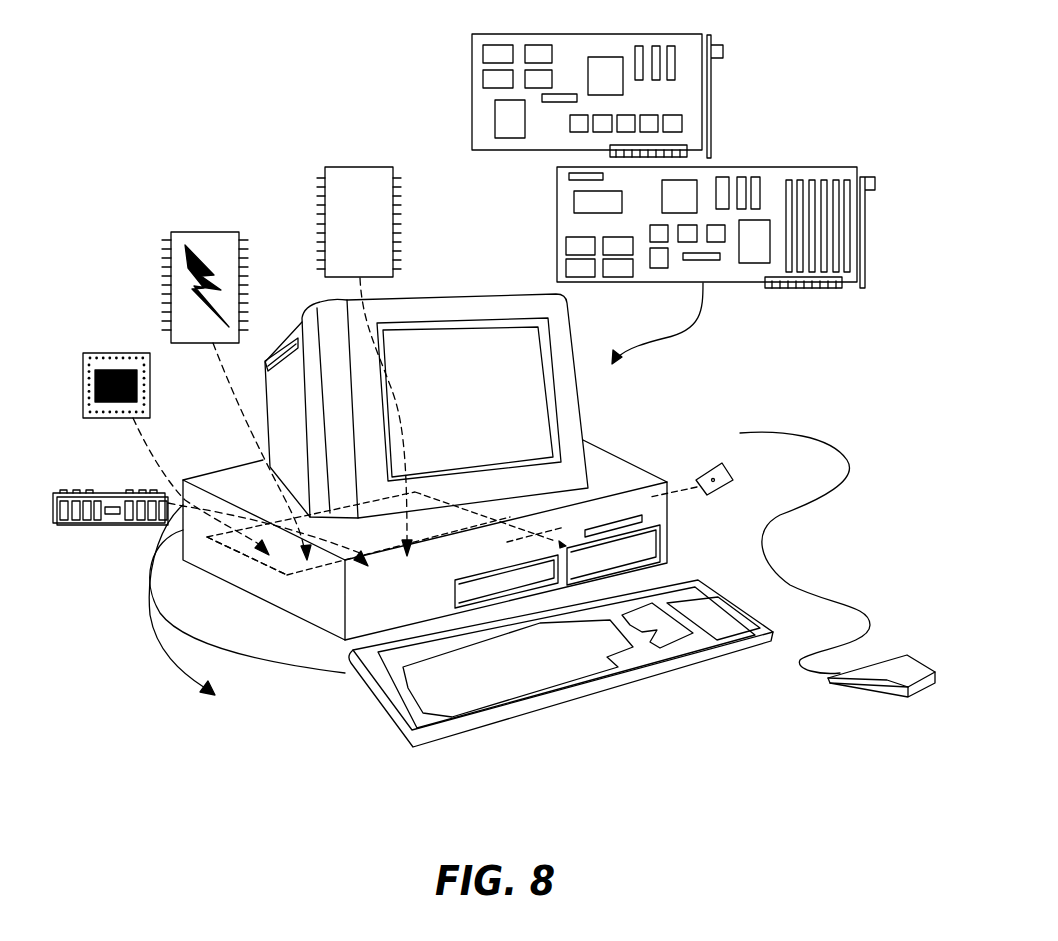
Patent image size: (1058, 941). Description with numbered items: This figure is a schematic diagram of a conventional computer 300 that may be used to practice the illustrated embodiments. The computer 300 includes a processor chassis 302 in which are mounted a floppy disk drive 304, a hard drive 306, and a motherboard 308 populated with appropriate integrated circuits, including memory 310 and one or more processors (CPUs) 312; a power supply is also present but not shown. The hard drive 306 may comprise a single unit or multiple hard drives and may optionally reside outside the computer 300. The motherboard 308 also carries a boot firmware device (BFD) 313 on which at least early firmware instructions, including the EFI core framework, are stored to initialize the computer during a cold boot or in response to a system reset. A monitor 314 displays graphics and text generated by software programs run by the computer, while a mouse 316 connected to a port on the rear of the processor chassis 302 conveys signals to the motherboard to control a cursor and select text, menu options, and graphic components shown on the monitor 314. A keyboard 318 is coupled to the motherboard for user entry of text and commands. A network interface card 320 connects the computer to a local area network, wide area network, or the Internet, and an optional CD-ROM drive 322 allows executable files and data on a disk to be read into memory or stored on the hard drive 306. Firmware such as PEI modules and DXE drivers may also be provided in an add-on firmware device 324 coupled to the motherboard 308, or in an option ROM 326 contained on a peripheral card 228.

The circuit card 228 is at (497, 132).
The computer 300 is at (570, 718).
The processor chassis 302 is at (650, 518).
The floppy disk drive 304 is at (627, 517).
The hard drive 306 is at (637, 550).
The motherboard 308 is at (287, 575).
The memory 310 is at (90, 492).
The processor (CPU) 312 is at (148, 403).
The boot firmware device (BFD) 313 is at (245, 263).
The monitor 314 is at (573, 358).
The mouse 316 is at (878, 687).
The keyboard 318 is at (657, 678).
The network interface card 320 is at (857, 222).
The CD-ROM drive 322 is at (455, 598).
The add-on firmware device 324 is at (392, 222).
The option ROM 326 is at (576, 199).